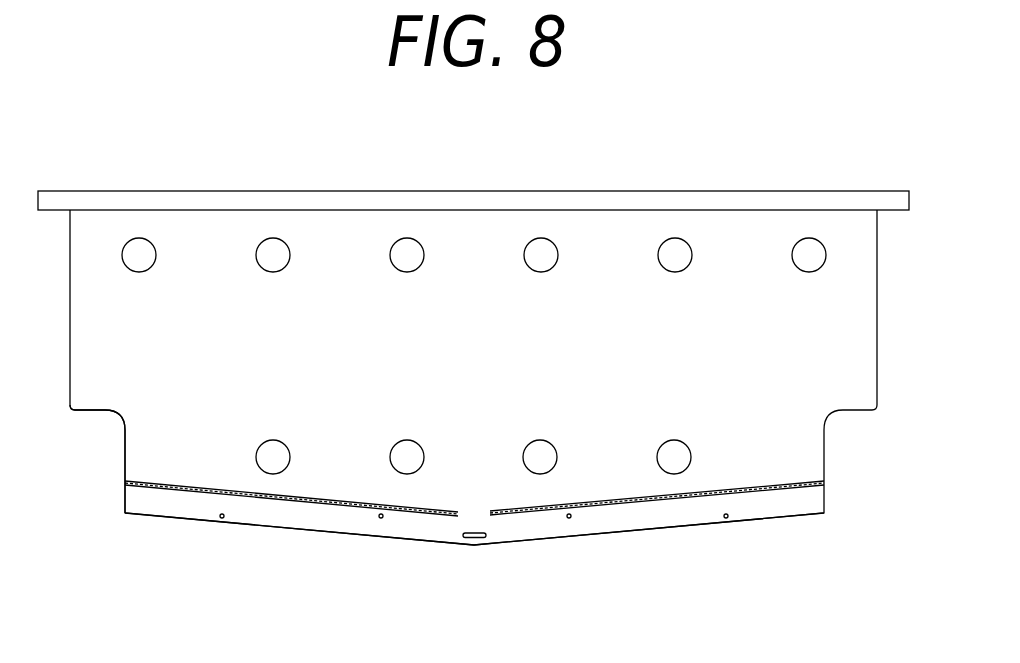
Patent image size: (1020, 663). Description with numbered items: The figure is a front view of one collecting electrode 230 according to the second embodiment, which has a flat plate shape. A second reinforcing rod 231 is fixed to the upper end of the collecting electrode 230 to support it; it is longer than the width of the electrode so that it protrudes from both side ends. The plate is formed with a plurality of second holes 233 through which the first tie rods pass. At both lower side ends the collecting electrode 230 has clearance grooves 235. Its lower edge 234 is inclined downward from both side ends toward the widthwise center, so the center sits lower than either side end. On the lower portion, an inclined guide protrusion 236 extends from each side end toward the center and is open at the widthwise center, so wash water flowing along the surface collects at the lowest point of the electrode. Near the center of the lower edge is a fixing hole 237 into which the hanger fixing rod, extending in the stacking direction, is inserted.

The collecting electrode 230 is at (566, 160).
The second reinforcing rod 231 is at (453, 203).
The second holes 233 is at (671, 455).
The lower edge 234 is at (185, 520).
The clearance grooves 235 is at (123, 472).
The guide protrusion 236 is at (297, 500).
The fixing hole 237 is at (473, 538).